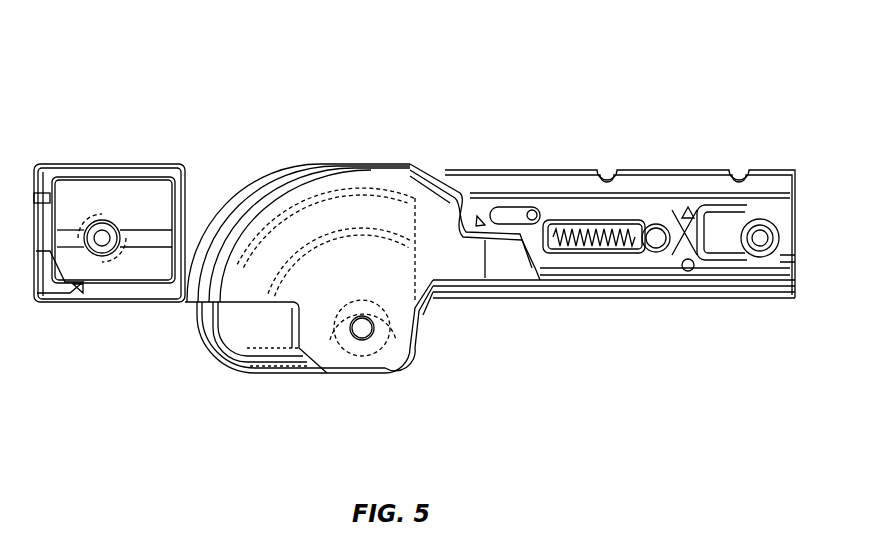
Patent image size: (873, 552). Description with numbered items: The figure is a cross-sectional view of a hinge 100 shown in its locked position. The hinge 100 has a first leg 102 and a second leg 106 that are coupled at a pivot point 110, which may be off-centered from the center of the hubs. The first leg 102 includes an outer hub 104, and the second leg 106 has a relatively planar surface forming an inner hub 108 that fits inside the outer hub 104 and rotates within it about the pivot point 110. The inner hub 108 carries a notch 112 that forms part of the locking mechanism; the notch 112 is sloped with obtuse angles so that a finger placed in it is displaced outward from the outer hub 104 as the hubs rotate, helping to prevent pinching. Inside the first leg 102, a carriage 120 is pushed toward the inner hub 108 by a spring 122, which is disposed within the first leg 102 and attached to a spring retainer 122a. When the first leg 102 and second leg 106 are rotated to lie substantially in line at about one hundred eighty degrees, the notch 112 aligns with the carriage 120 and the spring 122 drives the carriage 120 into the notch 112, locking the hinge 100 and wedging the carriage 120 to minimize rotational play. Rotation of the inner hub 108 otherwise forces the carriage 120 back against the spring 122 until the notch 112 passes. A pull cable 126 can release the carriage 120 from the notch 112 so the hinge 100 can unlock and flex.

The hinge 100 is at (418, 134).
The first leg 102 is at (645, 312).
The outer hub 104 is at (257, 374).
The second leg 106 is at (87, 316).
The inner hub 108 is at (257, 268).
The pivot point 110 is at (364, 331).
The notch 112 is at (468, 190).
The carriage 120 is at (478, 241).
The spring 122 is at (574, 256).
The spring retainer 122a is at (657, 228).
The pull cable 126 is at (789, 265).